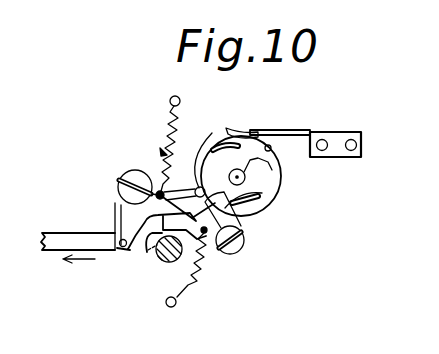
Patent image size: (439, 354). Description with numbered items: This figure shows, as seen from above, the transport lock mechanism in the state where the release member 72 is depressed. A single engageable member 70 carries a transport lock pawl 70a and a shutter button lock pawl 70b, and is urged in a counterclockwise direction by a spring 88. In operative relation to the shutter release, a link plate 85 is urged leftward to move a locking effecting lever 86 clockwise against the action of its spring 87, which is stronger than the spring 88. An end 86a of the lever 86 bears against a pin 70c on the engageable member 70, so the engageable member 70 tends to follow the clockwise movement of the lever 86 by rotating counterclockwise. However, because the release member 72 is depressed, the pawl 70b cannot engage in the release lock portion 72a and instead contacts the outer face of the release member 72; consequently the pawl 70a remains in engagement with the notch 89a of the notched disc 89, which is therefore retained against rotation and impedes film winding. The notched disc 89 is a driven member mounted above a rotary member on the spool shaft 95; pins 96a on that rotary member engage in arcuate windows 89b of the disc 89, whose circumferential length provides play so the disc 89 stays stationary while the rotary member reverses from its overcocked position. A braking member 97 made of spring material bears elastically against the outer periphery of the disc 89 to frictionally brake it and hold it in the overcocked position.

The engageable member 70 is at (206, 235).
The transport lock pawl 70a is at (211, 148).
The shutter button lock pawl 70b is at (148, 250).
The pin 70c is at (164, 150).
The release member 72 is at (194, 266).
The release lock portion 72a is at (166, 263).
The link plate 85 is at (58, 233).
The locking effecting lever 86 is at (115, 209).
The end of locking effecting lever 86a is at (158, 178).
The spring 87 is at (170, 103).
The spring 88 is at (177, 302).
The notched disc 89 is at (281, 169).
The notch 89a is at (245, 241).
The arcuate window 89b is at (220, 133).
The spool shaft 95 is at (263, 144).
The pin 96a is at (262, 124).
The braking member 97 is at (302, 129).